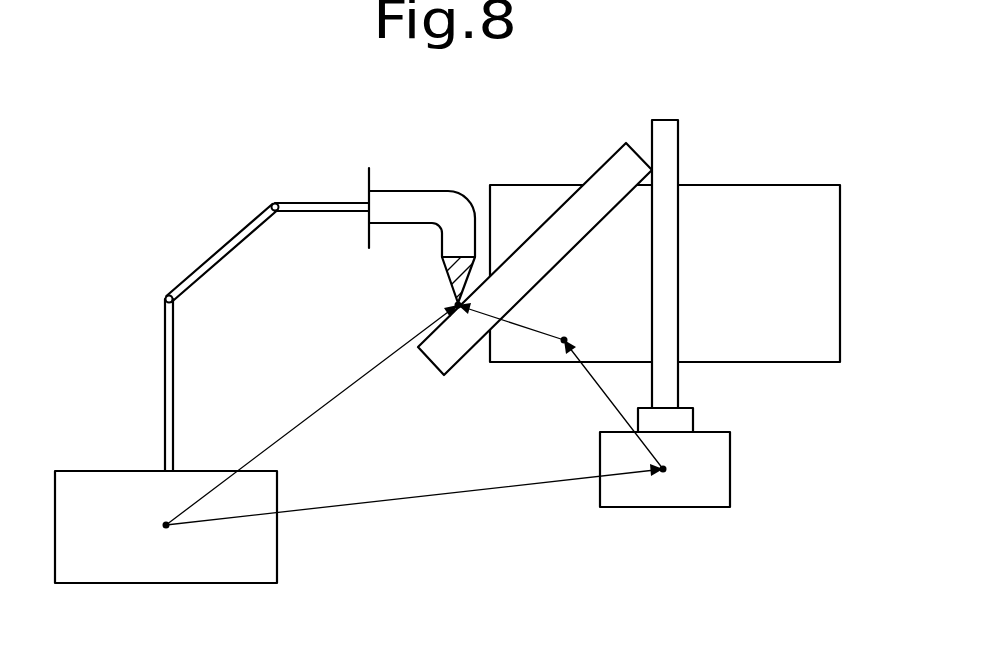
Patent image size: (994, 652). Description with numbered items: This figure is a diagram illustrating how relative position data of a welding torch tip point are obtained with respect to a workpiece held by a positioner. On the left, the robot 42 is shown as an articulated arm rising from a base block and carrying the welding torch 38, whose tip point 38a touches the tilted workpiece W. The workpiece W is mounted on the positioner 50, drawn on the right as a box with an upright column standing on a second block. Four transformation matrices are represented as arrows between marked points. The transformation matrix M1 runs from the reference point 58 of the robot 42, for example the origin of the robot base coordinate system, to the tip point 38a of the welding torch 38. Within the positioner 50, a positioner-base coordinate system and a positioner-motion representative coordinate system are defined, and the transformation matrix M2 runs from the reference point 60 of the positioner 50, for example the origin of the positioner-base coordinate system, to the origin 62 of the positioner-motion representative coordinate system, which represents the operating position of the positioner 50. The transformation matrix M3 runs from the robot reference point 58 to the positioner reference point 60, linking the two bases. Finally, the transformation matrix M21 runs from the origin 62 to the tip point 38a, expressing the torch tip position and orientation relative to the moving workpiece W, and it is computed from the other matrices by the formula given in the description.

The welding torch 38 is at (402, 252).
The tip point 38a is at (452, 306).
The robot 42 is at (168, 257).
The positioner 50 is at (629, 249).
The workpiece W is at (606, 161).
The reference point 58 is at (167, 529).
The reference point 60 is at (664, 473).
The origin 62 is at (561, 343).
The transformation matrix M1 is at (312, 415).
The transformation matrix M2 is at (611, 404).
The transformation matrix M21 is at (526, 318).
The transformation matrix M3 is at (414, 500).